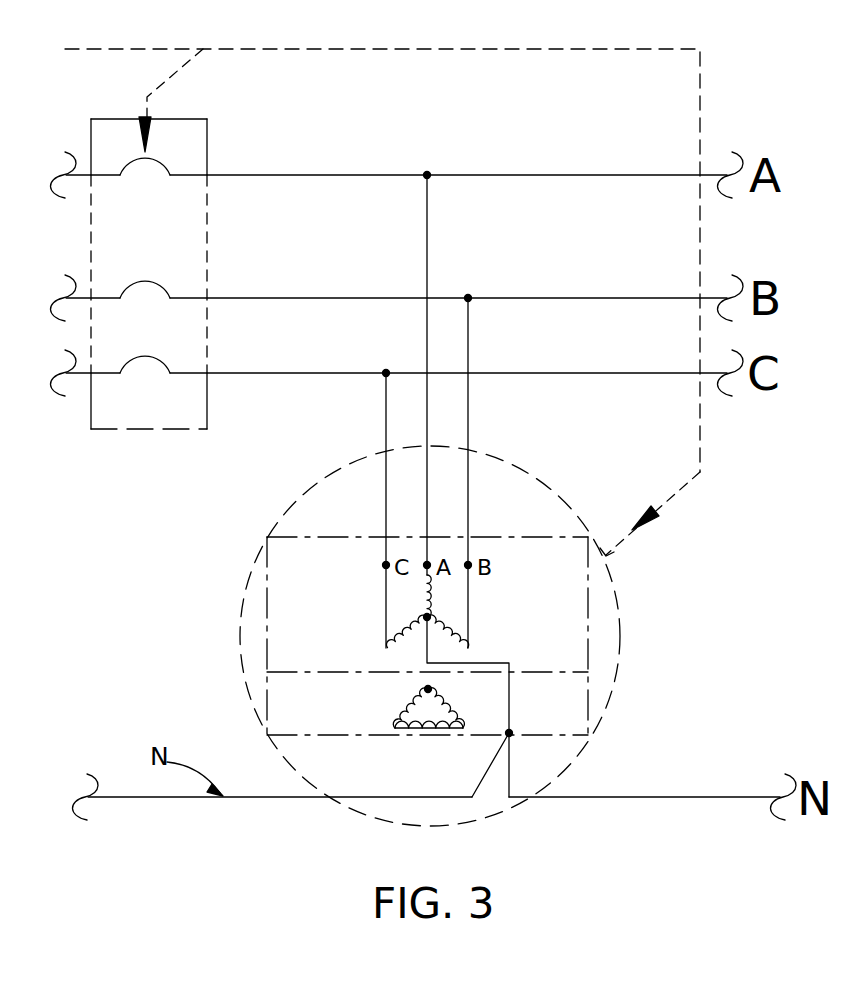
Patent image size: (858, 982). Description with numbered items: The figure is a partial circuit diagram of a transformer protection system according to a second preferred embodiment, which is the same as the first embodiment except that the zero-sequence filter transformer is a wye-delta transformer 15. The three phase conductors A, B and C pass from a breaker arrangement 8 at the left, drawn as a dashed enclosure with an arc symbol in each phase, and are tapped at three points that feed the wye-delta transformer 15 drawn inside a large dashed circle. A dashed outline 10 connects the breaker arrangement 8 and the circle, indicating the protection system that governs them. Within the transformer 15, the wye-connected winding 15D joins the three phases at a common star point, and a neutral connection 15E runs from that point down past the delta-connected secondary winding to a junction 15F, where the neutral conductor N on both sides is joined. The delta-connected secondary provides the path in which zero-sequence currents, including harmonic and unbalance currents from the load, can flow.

The circuit breaker 8 is at (209, 139).
The controller 10 is at (618, 655).
The wye-delta transformer 15 is at (476, 667).
The wye winding 15D is at (440, 617).
The neutral connection 15E is at (419, 656).
The neutral junction 15F is at (513, 740).